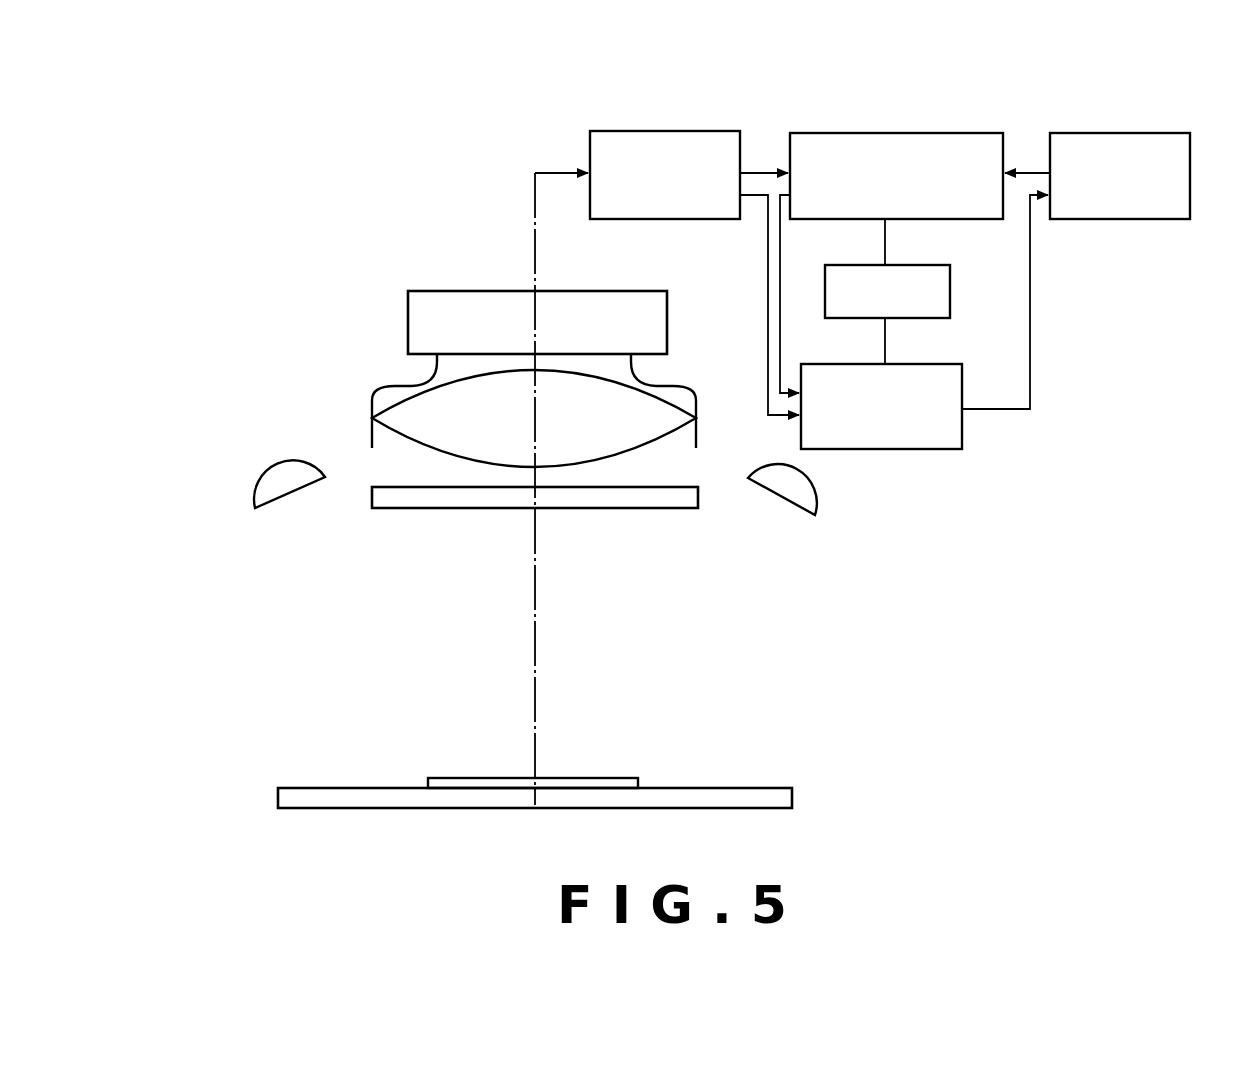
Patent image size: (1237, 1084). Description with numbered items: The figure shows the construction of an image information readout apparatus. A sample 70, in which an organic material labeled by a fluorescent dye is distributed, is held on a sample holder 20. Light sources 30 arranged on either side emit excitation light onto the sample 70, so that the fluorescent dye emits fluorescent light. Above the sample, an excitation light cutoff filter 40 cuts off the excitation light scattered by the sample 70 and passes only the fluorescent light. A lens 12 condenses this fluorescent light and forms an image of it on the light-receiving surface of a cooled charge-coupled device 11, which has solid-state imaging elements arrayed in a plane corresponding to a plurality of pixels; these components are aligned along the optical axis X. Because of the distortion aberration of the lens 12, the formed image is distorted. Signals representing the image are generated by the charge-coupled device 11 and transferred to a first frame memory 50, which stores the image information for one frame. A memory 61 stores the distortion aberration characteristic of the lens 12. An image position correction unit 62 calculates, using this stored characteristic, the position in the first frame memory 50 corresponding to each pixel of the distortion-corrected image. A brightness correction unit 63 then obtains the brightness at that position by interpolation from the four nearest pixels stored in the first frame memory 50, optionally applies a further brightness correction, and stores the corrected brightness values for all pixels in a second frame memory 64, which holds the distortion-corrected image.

The cooled charge-coupled device 11 is at (648, 290).
The lens 12 is at (650, 417).
The sample holder 20 is at (788, 790).
The light sources 30 is at (260, 497).
The excitation light cutoff filter 40 is at (690, 493).
The first frame memory 50 is at (695, 131).
The memory 61 is at (917, 318).
The pixel position correction unit 62 is at (923, 133).
The brightness correction unit 63 is at (913, 450).
The second frame memory 64 is at (1123, 133).
The sample 70 is at (608, 782).
The optical axis X is at (535, 584).